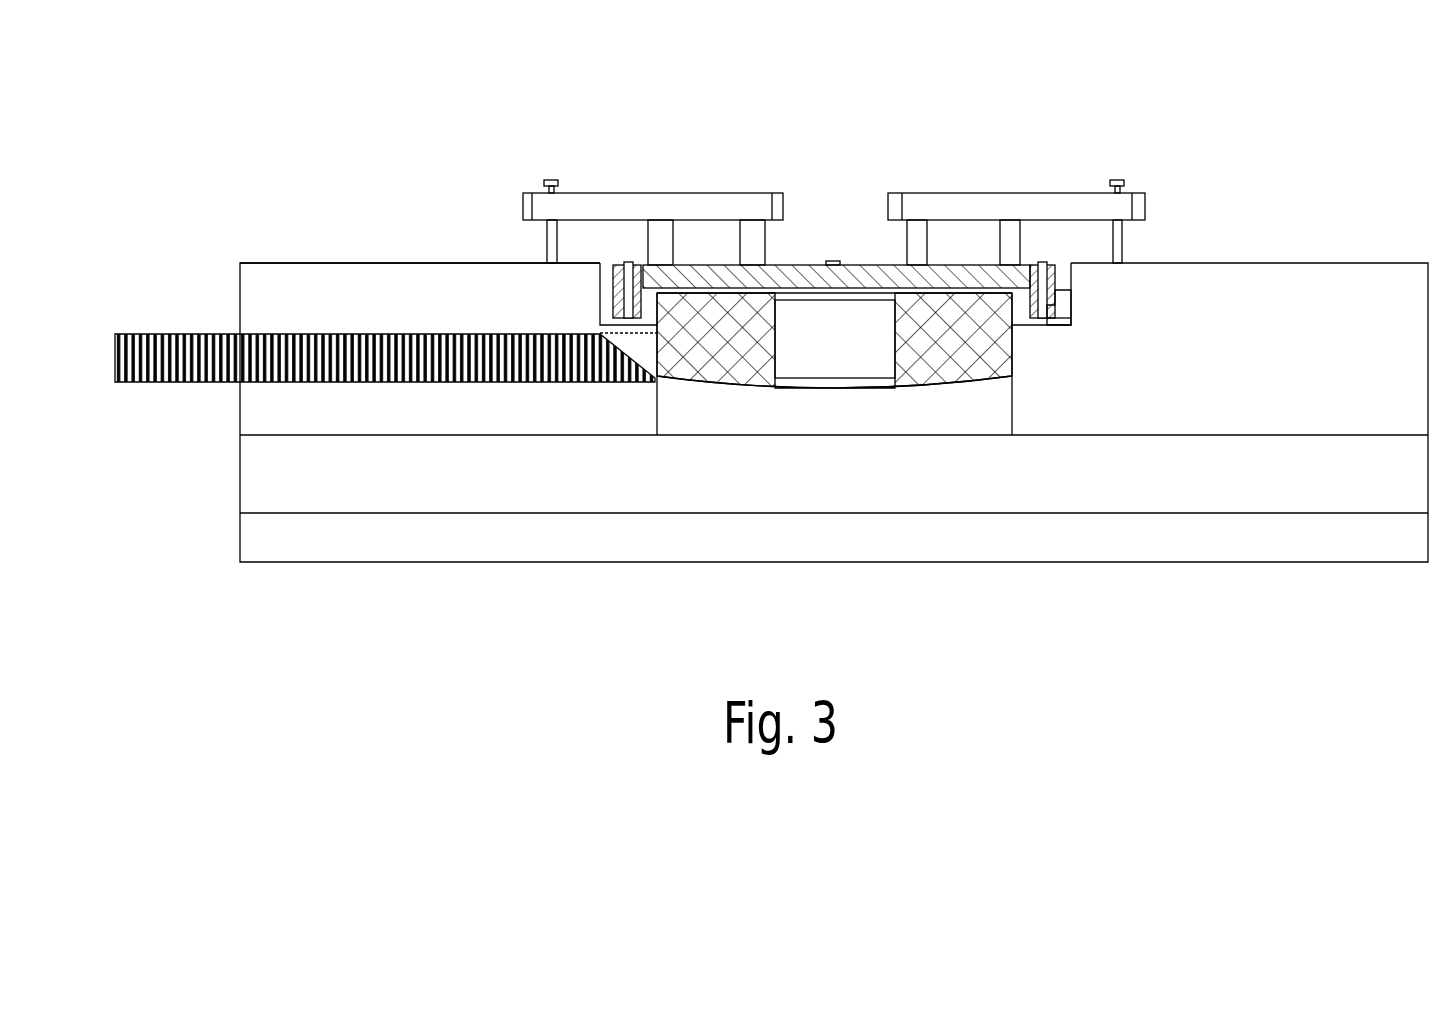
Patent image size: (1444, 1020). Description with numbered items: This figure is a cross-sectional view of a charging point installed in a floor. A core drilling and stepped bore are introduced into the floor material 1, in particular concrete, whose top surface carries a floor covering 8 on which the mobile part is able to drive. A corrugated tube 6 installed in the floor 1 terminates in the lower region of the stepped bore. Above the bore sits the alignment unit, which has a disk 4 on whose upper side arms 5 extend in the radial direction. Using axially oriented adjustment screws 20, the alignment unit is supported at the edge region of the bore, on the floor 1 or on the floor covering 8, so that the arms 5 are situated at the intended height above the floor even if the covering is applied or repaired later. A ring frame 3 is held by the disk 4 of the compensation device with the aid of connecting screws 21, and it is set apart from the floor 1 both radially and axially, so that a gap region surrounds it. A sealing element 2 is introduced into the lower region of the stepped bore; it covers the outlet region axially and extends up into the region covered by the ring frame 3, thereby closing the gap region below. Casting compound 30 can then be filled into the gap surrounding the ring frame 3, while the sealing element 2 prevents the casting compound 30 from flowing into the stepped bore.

The floor material 1 is at (347, 299).
The sealing element 2 is at (755, 352).
The ring frame 3 is at (1047, 297).
The disk 4 is at (869, 277).
The arms 5 is at (681, 207).
The corrugated tube 6 is at (190, 354).
The floor covering 8 is at (470, 263).
The adjustment screws 20 is at (553, 182).
The connecting screws 21 is at (632, 297).
The casting compound 30 is at (1060, 315).